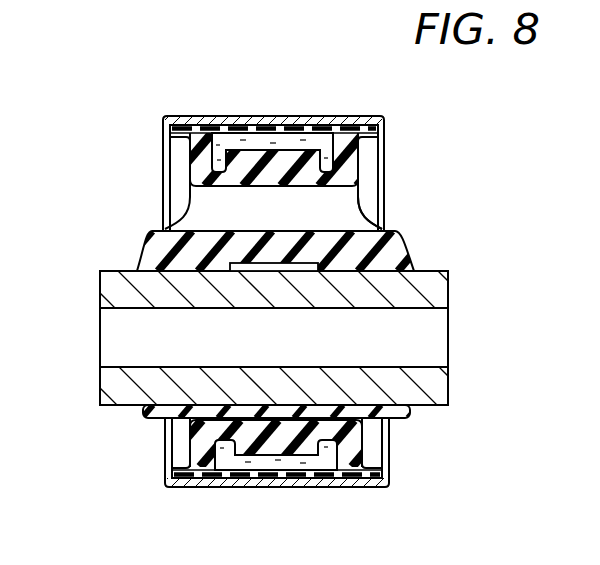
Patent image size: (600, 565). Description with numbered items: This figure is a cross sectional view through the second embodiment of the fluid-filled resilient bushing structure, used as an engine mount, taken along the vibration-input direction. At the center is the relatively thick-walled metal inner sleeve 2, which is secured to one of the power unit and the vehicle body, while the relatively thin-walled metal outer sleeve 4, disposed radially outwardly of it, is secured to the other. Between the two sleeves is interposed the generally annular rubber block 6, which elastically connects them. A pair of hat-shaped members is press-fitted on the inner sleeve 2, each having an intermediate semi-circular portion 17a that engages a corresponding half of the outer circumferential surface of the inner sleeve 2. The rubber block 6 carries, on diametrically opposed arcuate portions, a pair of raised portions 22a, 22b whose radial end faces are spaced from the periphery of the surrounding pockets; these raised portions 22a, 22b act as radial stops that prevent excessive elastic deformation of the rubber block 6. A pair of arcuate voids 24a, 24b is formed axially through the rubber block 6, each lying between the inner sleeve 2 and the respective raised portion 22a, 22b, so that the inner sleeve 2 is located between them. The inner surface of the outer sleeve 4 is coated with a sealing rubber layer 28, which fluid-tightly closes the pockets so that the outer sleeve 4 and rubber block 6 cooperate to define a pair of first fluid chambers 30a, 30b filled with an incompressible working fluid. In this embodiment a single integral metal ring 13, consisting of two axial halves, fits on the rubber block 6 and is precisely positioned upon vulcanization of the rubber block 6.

The inner sleeve 2 is at (432, 288).
The outer sleeve 4 is at (357, 118).
The rubber block 6 is at (355, 248).
The metal ring 13 is at (363, 137).
The semi-circular portion 17a is at (272, 272).
The raised portion 22a is at (265, 150).
The raised portion 22b is at (265, 446).
The arcuate void 24a is at (203, 208).
The arcuate void 24b is at (342, 416).
The sealing rubber layer 28 is at (218, 123).
The first fluid chamber 30a is at (313, 130).
The first fluid chamber 30b is at (311, 466).